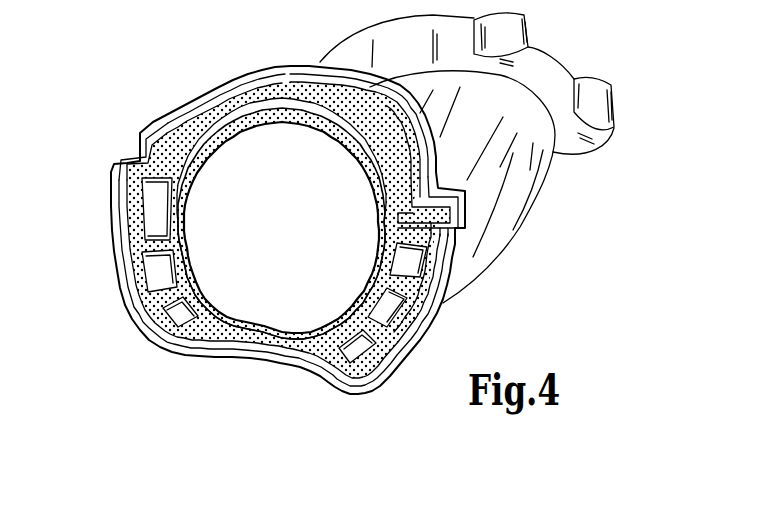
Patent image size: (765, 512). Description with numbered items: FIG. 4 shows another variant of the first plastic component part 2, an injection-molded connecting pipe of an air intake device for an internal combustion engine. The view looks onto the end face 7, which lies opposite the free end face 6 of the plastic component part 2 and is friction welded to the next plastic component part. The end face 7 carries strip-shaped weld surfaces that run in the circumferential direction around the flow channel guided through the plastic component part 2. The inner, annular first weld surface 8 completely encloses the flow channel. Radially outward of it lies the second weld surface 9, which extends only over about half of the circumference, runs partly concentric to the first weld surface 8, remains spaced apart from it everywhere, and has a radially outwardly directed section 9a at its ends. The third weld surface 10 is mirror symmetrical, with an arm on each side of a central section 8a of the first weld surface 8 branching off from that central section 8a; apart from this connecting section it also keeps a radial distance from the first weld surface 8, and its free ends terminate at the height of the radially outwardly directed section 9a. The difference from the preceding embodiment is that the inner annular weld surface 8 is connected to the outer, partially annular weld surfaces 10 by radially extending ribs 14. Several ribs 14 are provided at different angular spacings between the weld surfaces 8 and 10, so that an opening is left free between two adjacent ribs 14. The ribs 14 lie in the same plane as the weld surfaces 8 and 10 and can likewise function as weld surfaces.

The first plastic component part 2 is at (308, 219).
The free end face 6 is at (566, 50).
The end face 7 is at (433, 316).
The first weld surface 8 is at (180, 217).
The central section 8a is at (264, 342).
The second weld surface 9 is at (277, 78).
The radially outwardly directed section 9a is at (458, 229).
The third weld surface 10 is at (130, 240).
The ribs 14 is at (140, 167).